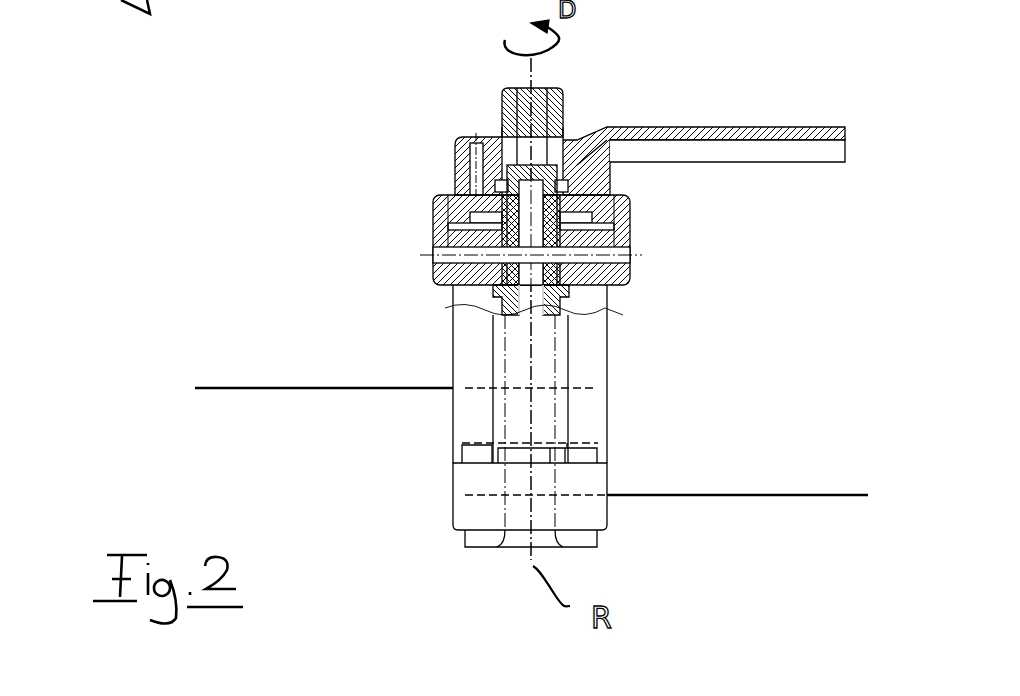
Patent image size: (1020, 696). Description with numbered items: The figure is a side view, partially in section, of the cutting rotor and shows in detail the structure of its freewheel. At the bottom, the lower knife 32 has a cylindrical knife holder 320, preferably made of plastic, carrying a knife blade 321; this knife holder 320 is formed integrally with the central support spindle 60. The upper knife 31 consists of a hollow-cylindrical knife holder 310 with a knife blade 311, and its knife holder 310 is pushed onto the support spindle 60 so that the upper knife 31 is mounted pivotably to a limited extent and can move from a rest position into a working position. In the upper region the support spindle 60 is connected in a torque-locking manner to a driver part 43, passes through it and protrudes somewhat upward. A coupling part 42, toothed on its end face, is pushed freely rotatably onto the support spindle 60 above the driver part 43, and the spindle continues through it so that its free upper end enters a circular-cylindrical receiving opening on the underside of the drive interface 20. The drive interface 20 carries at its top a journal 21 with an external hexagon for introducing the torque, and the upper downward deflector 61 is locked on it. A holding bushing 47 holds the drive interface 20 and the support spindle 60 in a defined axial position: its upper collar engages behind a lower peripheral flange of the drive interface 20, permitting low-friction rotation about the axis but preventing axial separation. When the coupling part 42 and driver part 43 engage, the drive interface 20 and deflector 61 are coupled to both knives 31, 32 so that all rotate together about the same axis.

The drive interface 20 is at (445, 156).
The journal 21 is at (507, 110).
The coupling part 42 is at (483, 202).
The driver part 43 is at (462, 238).
The holding bushing 47 is at (620, 277).
The support spindle 60 is at (542, 173).
The upper downward deflector 61 is at (697, 152).
The upper knife 31 is at (385, 330).
The knife holder 310 is at (593, 368).
The knife blade 311 is at (362, 387).
The lower knife 32 is at (647, 512).
The knife blade 321 is at (715, 495).
The knife holder 320 is at (598, 520).